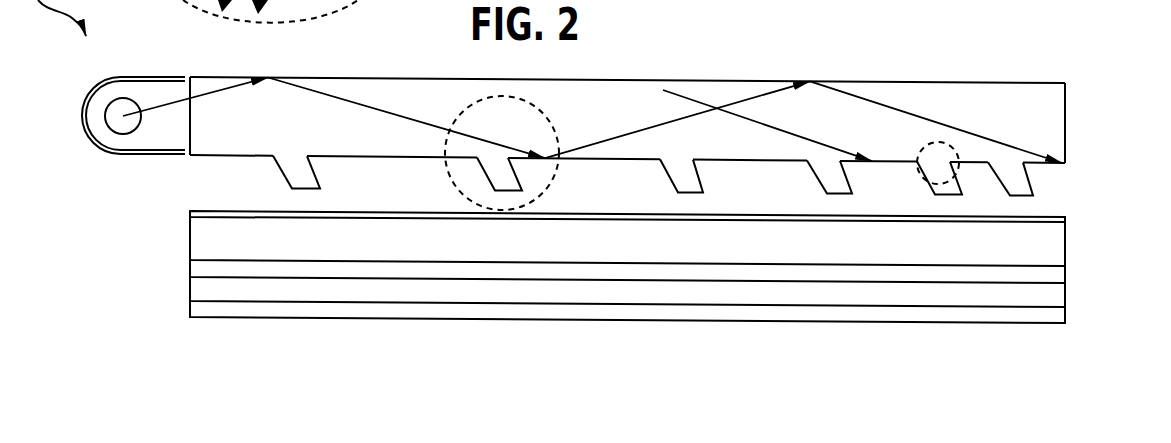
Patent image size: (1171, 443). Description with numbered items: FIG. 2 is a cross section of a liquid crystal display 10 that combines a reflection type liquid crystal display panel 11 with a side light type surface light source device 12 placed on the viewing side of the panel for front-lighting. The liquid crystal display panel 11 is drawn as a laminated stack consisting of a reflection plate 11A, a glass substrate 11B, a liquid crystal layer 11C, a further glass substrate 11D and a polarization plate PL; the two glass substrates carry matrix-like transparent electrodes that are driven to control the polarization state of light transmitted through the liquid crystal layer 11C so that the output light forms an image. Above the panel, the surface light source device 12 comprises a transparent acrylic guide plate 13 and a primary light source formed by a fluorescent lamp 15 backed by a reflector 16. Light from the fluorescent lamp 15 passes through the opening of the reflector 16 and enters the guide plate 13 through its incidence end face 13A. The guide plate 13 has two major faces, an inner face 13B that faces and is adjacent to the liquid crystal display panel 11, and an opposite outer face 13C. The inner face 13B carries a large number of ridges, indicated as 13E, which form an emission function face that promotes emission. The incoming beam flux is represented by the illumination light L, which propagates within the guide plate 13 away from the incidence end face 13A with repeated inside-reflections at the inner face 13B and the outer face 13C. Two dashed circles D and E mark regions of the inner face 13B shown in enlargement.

The liquid crystal display 10 is at (247, 337).
The liquid crystal display panel 11 is at (997, 335).
The reflection plate 11A is at (1052, 322).
The glass substrate 11B is at (1052, 302).
The liquid crystal layer 11C is at (1052, 277).
The glass substrate 11D is at (1052, 246).
The polarization plate PL is at (1062, 218).
The surface light source device 12 is at (1044, 78).
The guide plate 13 is at (1042, 130).
The incidence end face 13A is at (191, 133).
The inner face 13B is at (607, 162).
The outer face 13C is at (594, 80).
The prism grooves on bottom surface of light guide plate 13E is at (303, 176).
The fluorescent lamp 15 is at (122, 127).
The reflector 16 is at (86, 141).
The illumination light L is at (233, 88).
The enlarged region D is at (502, 153).
The enlarged region E is at (932, 153).